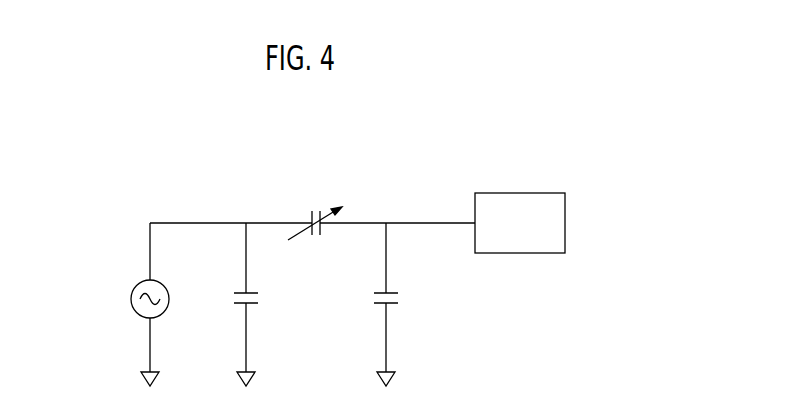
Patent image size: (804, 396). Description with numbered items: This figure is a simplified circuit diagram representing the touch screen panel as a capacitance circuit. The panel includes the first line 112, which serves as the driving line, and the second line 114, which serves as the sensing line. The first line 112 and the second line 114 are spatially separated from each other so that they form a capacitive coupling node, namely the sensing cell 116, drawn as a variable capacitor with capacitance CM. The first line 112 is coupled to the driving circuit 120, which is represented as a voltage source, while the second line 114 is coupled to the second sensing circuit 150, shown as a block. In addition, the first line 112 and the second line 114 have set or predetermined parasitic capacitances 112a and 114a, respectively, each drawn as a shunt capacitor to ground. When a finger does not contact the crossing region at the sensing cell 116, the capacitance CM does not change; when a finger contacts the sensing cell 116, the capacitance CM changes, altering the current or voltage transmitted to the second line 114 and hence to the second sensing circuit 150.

The first line 112 is at (178, 222).
The parasitic capacitance 112a is at (260, 300).
The second line 114 is at (425, 222).
The parasitic capacitance 114a is at (400, 300).
The sensing cell 116 is at (315, 205).
The driving circuit 120 is at (131, 300).
The second sensing circuit 150 is at (565, 223).